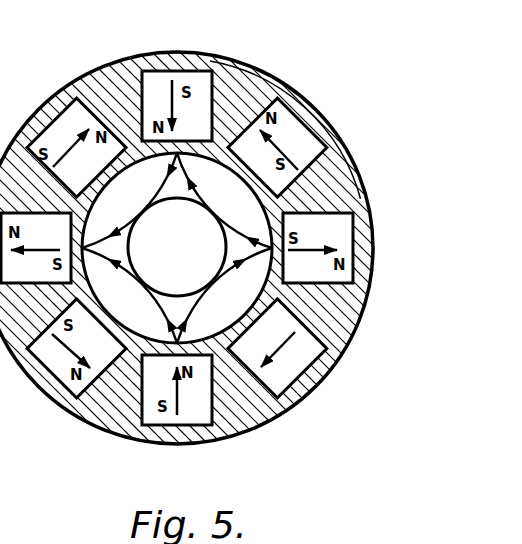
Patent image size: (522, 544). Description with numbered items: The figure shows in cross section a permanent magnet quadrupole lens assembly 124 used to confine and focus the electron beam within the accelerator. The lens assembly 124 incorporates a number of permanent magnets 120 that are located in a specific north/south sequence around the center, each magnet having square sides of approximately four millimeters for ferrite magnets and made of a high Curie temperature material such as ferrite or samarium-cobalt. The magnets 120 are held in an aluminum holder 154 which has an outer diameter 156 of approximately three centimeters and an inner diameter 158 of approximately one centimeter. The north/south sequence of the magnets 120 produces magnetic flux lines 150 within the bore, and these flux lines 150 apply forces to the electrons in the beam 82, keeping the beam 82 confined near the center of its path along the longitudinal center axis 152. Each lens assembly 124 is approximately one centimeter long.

The permanent magnets 120 is at (197, 447).
The permanent magnet quadrupole lens assembly 124 is at (256, 59).
The magnetic flux lines 150 is at (157, 198).
The longitudinal center axis 152 is at (198, 245).
The aluminum holder 154 is at (320, 370).
The outer diameter 156 is at (317, 107).
The inner diameter 158 is at (253, 292).
The electron beam 82 is at (162, 275).